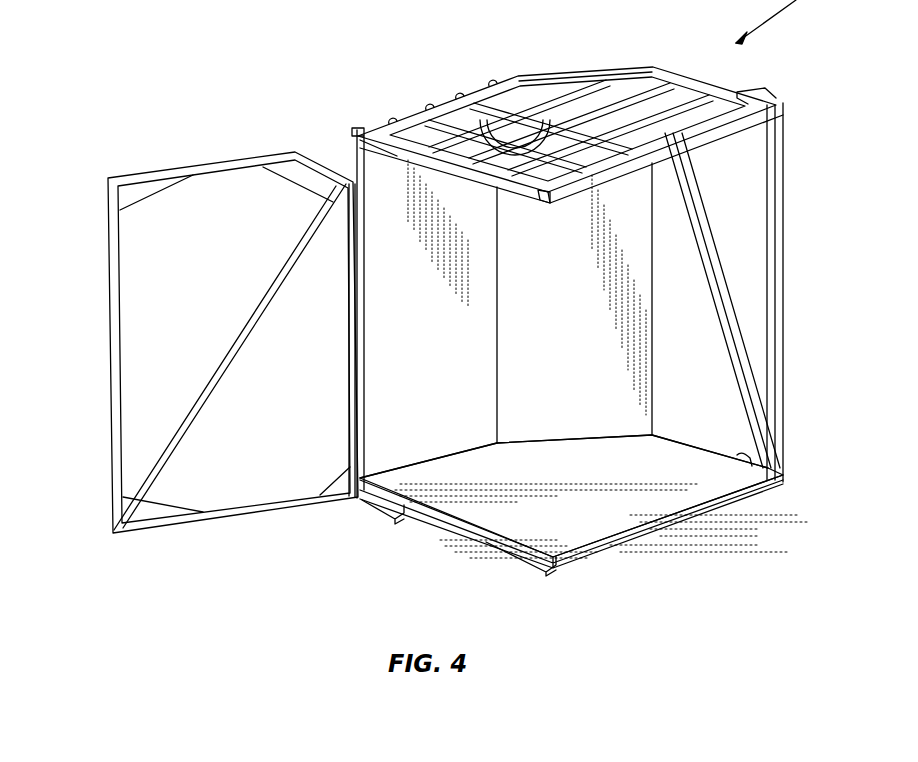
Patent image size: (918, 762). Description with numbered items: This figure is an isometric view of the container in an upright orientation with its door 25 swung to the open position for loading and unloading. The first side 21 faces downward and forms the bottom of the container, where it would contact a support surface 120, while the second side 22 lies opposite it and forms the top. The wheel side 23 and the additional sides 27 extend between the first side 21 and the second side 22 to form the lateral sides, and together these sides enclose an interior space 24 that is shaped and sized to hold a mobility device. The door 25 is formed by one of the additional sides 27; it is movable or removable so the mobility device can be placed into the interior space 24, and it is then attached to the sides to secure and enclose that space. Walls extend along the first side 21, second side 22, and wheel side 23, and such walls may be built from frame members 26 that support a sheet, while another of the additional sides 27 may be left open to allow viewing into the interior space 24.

The support surface 120 is at (773, 615).
The first side 21 is at (572, 512).
The second side 22 is at (577, 95).
The wheel side 23 is at (437, 380).
The interior space 24 is at (640, 473).
The door 25 is at (168, 150).
The frame members 26 is at (692, 222).
The additional sides 27 is at (160, 358).